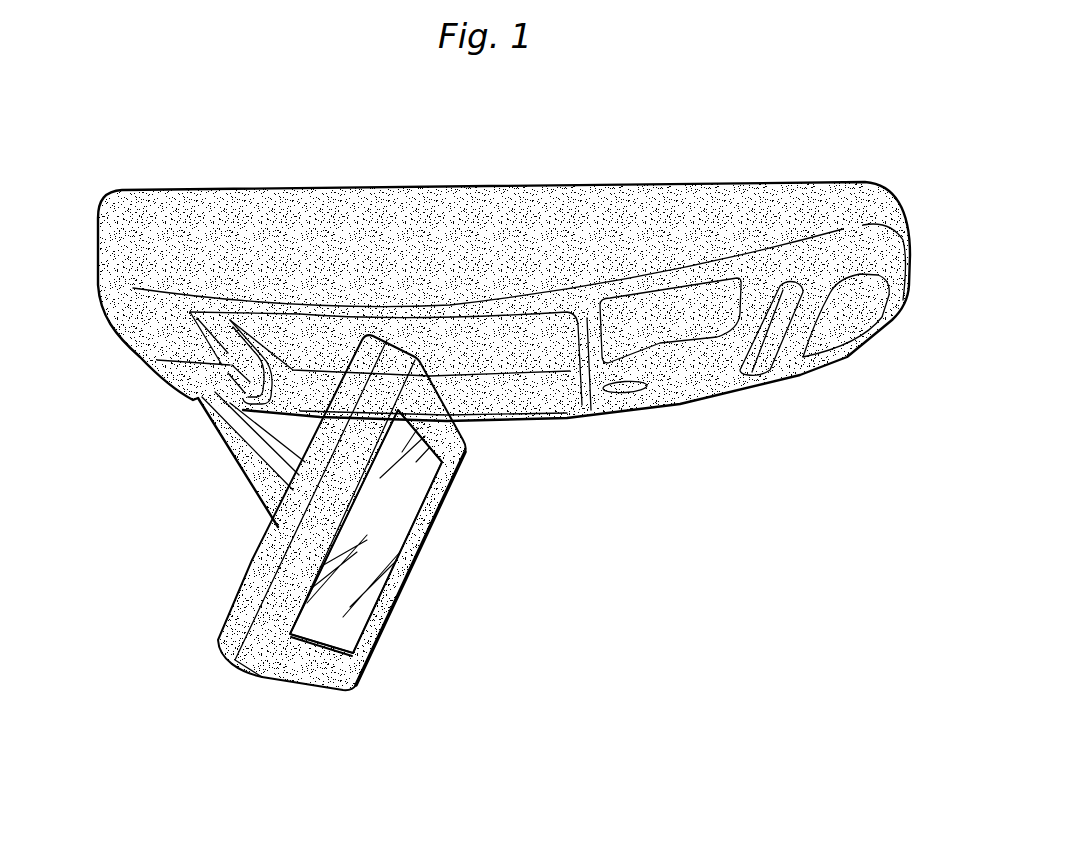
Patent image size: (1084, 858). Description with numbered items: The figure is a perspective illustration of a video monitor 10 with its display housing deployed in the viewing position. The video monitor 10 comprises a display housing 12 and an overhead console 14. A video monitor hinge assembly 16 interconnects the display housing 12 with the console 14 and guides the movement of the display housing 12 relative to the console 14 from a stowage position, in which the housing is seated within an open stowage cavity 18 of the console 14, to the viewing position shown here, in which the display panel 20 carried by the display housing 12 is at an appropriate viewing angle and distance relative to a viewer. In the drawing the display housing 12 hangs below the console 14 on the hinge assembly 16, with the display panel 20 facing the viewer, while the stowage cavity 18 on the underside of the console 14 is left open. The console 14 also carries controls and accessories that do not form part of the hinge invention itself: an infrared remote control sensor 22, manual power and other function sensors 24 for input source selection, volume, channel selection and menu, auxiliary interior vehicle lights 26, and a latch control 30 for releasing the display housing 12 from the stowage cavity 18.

The video monitor 10 is at (627, 522).
The display housing 12 is at (342, 559).
The console 14 is at (468, 212).
The video monitor hinge assembly 16 is at (190, 516).
The open stowage cavity 18 is at (532, 407).
The display panel 20 is at (393, 577).
The infrared remote control sensor 22 is at (848, 335).
The manual power and function sensors 24 is at (752, 371).
The auxiliary interior vehicle lights 26 is at (680, 287).
The latch control 30 is at (636, 421).